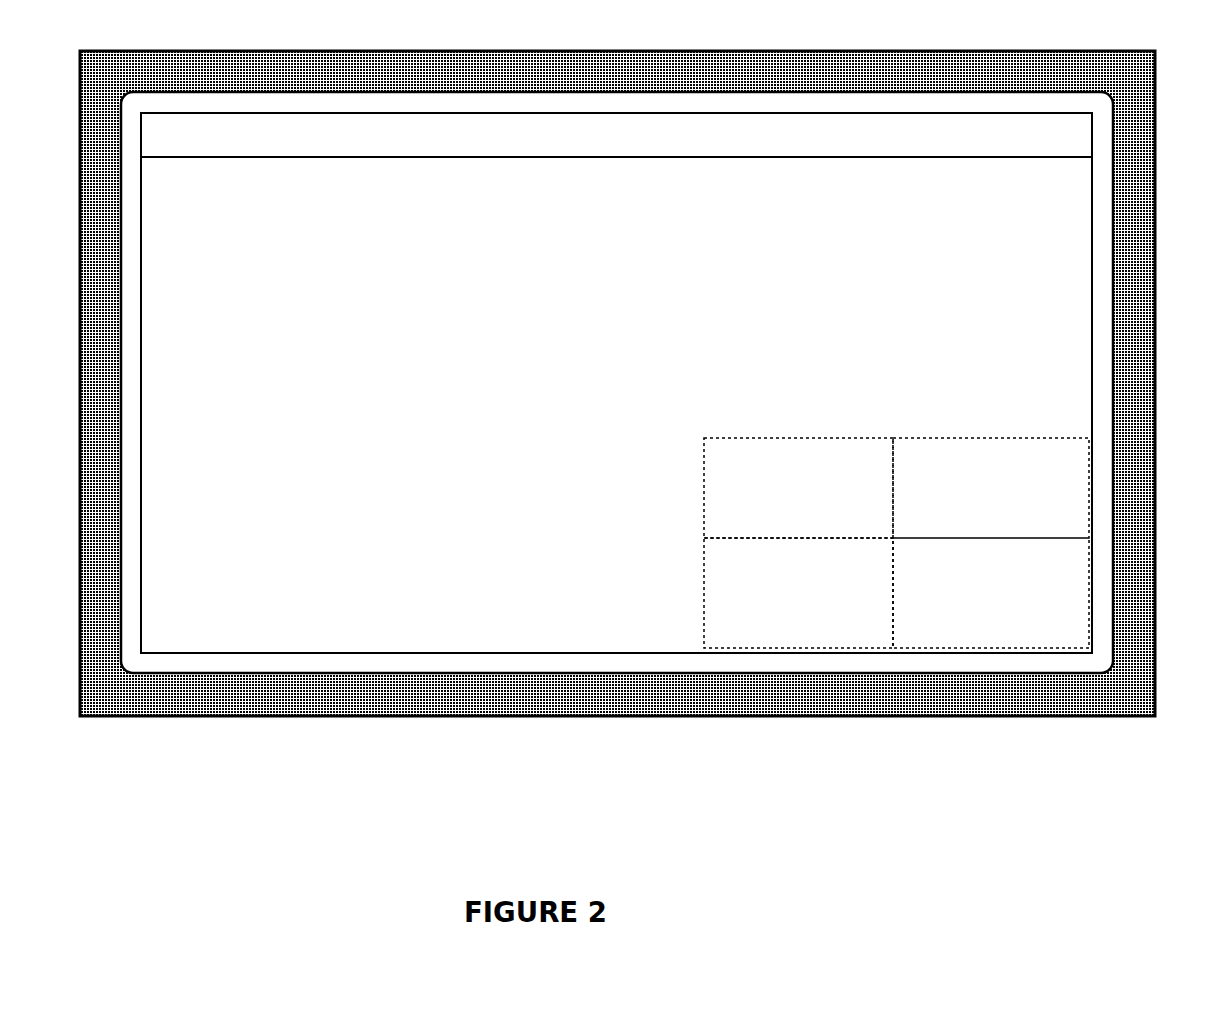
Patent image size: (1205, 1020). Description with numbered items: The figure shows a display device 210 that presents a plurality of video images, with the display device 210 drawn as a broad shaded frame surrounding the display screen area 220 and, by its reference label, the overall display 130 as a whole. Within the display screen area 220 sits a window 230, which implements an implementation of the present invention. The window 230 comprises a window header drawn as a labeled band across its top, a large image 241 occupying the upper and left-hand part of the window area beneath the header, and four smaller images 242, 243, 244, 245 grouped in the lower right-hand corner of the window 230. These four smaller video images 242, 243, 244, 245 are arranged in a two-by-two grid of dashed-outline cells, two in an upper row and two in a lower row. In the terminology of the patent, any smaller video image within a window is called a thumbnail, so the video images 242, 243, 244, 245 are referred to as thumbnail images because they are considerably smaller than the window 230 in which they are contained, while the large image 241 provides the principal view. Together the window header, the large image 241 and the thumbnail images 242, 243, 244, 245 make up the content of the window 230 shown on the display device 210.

The display device 130 is at (627, 431).
The display device 210 is at (325, 716).
The display screen area 220 is at (493, 673).
The window 230 is at (616, 462).
The large image 241 is at (637, 254).
The thumbnail image 242 is at (835, 500).
The thumbnail image 243 is at (1035, 500).
The thumbnail image 244 is at (835, 598).
The thumbnail image 245 is at (1023, 598).